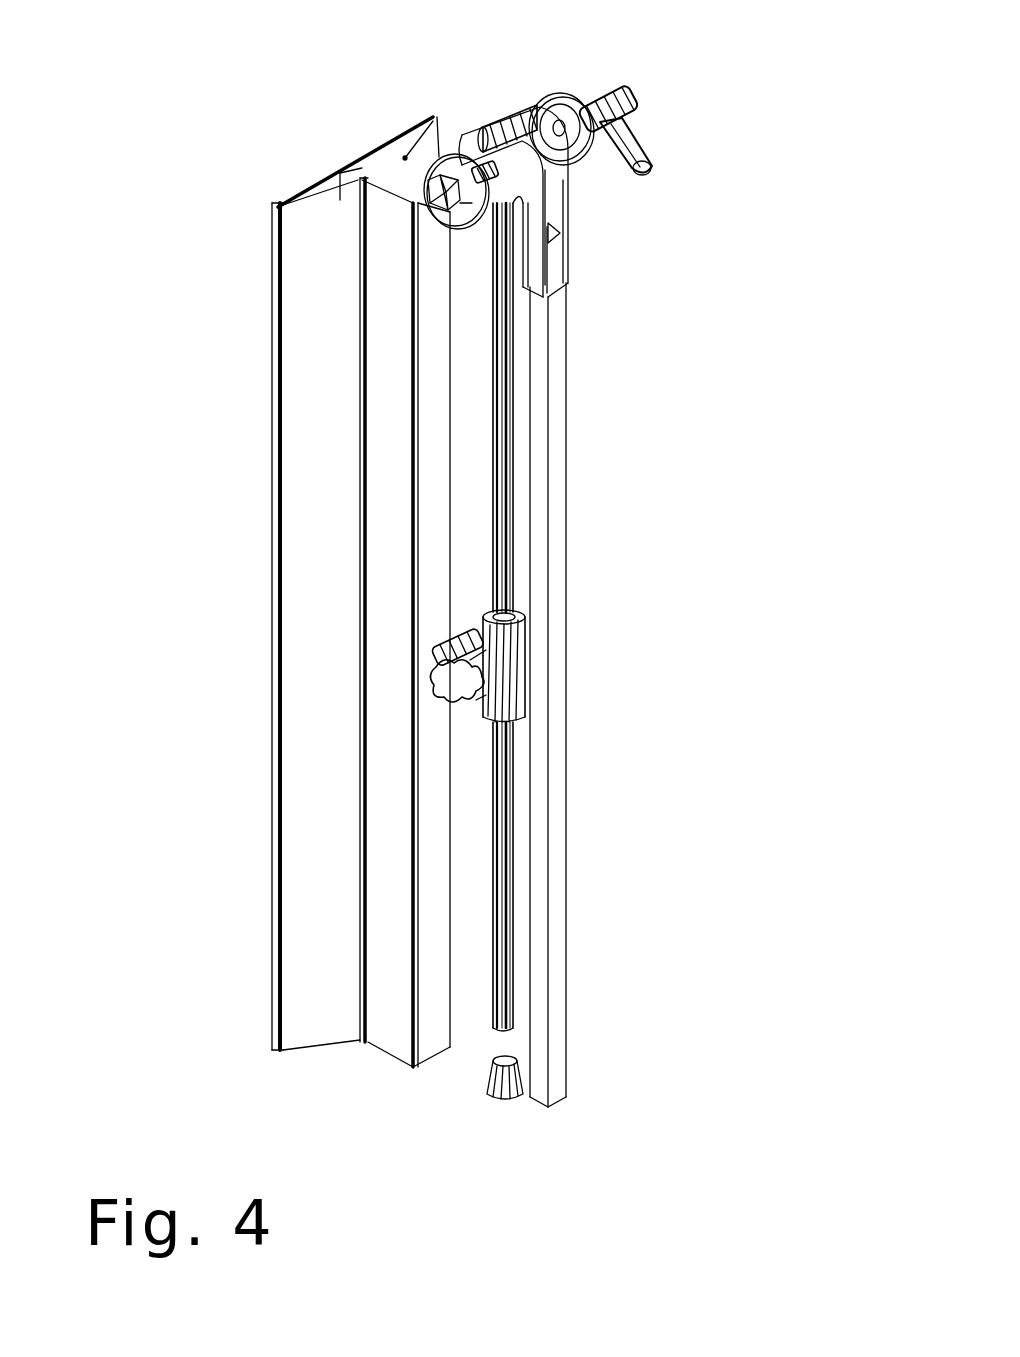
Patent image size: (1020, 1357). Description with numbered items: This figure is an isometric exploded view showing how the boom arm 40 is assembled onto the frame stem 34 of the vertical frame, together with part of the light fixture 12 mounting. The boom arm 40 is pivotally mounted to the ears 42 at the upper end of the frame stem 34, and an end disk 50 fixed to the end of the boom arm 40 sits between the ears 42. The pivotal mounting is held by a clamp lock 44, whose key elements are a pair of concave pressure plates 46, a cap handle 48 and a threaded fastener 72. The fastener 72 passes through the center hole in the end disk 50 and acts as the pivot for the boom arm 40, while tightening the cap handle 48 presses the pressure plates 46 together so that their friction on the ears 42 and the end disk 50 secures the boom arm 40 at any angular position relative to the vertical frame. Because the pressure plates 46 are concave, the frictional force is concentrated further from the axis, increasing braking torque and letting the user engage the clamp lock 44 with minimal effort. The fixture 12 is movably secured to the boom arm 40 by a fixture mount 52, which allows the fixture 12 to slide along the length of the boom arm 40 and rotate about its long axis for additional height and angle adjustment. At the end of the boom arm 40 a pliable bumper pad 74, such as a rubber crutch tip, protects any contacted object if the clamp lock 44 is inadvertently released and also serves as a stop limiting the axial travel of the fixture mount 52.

The fixture 12 is at (230, 565).
The frame stem 34 is at (565, 453).
The boom arm 40 is at (513, 373).
The ears 42 is at (547, 210).
The clamp lock 44 is at (628, 215).
The pressure plates 46 is at (432, 117).
The cap handle 48 is at (640, 127).
The end disk 50 is at (480, 123).
The fixture mount 52 is at (527, 663).
The threaded fastener 72 is at (455, 225).
The bumper pad 74 is at (493, 1100).